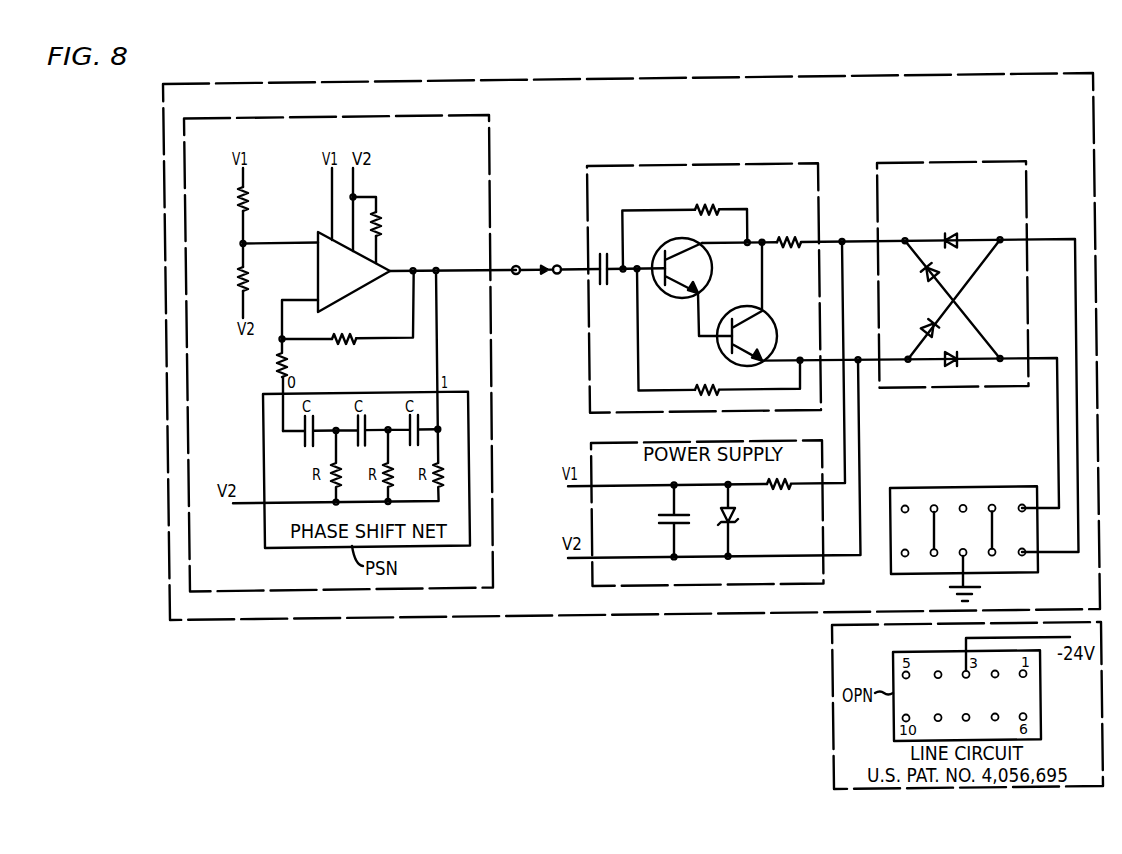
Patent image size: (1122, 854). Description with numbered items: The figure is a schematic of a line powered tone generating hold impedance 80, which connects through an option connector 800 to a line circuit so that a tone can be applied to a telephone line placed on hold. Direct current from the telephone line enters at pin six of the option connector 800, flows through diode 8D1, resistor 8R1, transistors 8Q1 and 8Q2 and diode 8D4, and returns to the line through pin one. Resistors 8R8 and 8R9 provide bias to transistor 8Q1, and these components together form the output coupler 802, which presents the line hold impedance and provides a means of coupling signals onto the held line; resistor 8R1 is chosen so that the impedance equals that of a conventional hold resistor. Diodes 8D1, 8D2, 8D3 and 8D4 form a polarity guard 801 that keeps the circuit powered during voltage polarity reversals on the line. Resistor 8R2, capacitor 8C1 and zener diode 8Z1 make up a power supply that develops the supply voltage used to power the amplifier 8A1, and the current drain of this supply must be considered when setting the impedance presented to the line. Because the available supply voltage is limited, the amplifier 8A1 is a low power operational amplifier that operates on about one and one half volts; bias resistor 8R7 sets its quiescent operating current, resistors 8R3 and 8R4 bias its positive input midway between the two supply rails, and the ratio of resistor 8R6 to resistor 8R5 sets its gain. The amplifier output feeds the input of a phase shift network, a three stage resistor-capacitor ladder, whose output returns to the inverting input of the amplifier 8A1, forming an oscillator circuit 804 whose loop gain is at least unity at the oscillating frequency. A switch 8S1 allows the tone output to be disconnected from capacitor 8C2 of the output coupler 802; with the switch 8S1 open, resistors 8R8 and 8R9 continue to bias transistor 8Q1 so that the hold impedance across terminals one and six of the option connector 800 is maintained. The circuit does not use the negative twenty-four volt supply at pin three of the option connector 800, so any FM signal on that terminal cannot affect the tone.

The tone generating hold impedance 80 is at (468, 613).
The option connector 800 is at (938, 488).
The polarity guard 801 is at (990, 161).
The output coupler 802 is at (730, 164).
The oscillator circuit 804 is at (350, 118).
The amplifier 8A1 is at (345, 265).
The resistor 8R1 is at (787, 228).
The resistor 8R2 is at (776, 491).
The resistor 8R3 is at (240, 200).
The resistor 8R4 is at (240, 278).
The resistor 8R5 is at (290, 360).
The resistor 8R6 is at (352, 330).
The bias resistor 8R7 is at (381, 225).
The resistor 8R8 is at (722, 206).
The resistor 8R9 is at (704, 385).
The capacitor 8C1 is at (700, 522).
The capacitor 8C2 is at (608, 286).
The transistor 8Q1 is at (658, 289).
The transistor 8Q2 is at (778, 329).
The diode 8D1 is at (946, 229).
The diode 8D2 is at (922, 279).
The diode 8D3 is at (925, 325).
The diode 8D4 is at (960, 364).
The zener diode 8Z1 is at (735, 520).
The switch 8S1 is at (530, 265).